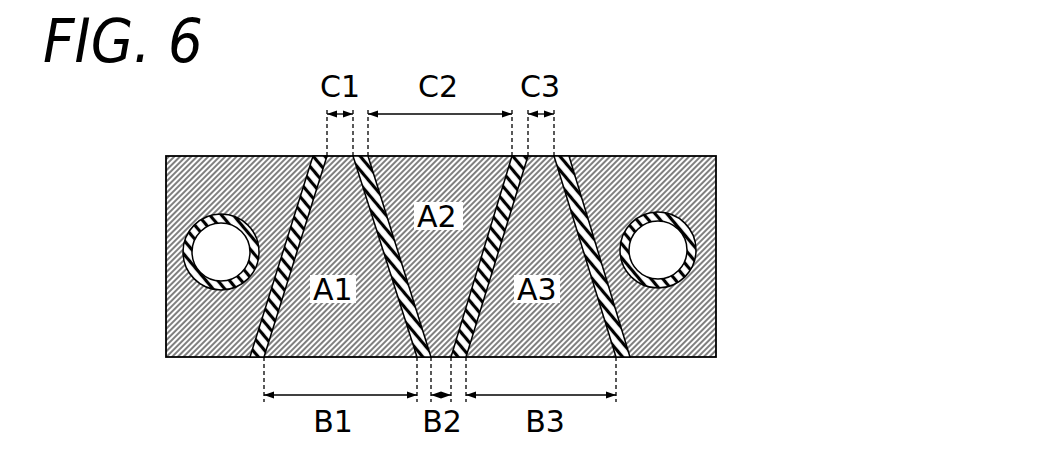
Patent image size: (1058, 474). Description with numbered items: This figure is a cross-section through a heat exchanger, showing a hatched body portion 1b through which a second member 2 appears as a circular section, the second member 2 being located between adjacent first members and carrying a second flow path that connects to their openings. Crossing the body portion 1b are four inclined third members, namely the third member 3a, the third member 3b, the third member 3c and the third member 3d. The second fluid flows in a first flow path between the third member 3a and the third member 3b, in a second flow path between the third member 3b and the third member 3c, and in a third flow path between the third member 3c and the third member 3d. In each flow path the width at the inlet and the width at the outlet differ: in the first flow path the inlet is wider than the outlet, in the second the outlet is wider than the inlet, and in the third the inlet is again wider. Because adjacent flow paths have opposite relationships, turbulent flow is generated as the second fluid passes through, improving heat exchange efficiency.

The second main surface of substrate 1 1b is at (668, 192).
The second member 2 is at (186, 268).
The third member 3a is at (291, 226).
The third member 3b is at (373, 217).
The third member 3c is at (513, 205).
The third member 3d is at (590, 228).